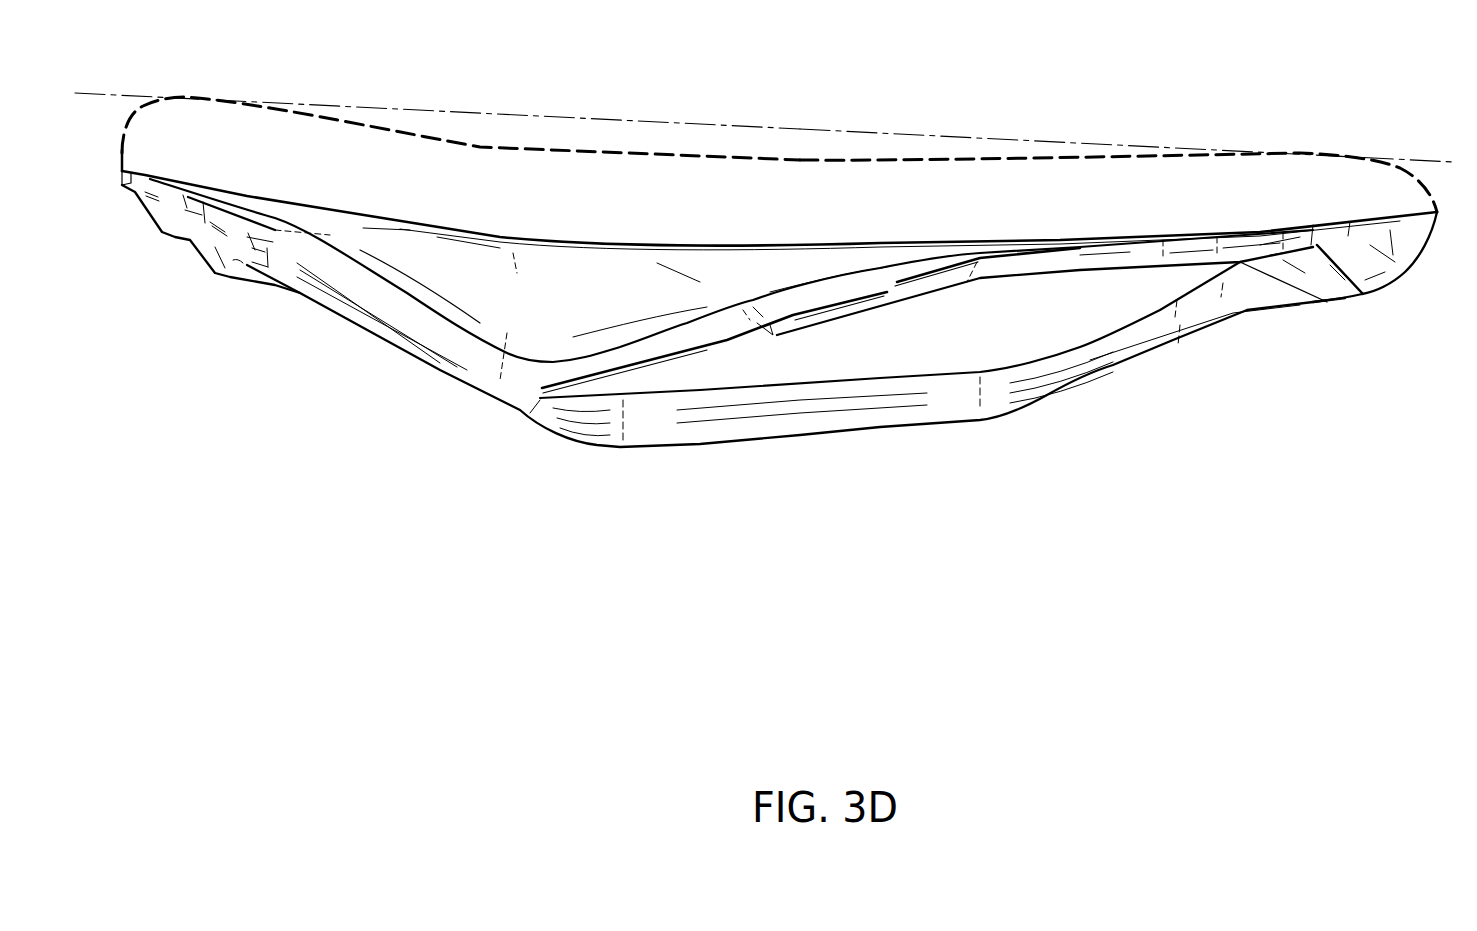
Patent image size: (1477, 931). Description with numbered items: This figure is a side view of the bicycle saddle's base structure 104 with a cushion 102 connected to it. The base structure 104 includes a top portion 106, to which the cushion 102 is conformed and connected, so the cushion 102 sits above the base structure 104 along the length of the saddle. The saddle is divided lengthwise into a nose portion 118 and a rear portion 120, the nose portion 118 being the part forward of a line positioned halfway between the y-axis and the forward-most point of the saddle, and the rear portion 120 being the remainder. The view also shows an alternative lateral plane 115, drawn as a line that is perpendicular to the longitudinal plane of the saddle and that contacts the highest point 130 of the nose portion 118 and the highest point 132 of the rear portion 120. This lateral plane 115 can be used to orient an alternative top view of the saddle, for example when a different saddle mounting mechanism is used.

The cushion 102 is at (250, 150).
The base structure 104 is at (387, 307).
The top portion 106 is at (565, 270).
The lateral plane 115 is at (1397, 162).
The nose portion 118 is at (1353, 197).
The rear portion 120 is at (340, 180).
The highest point of the nose portion 130 is at (1277, 153).
The highest point of the rear portion 132 is at (182, 97).